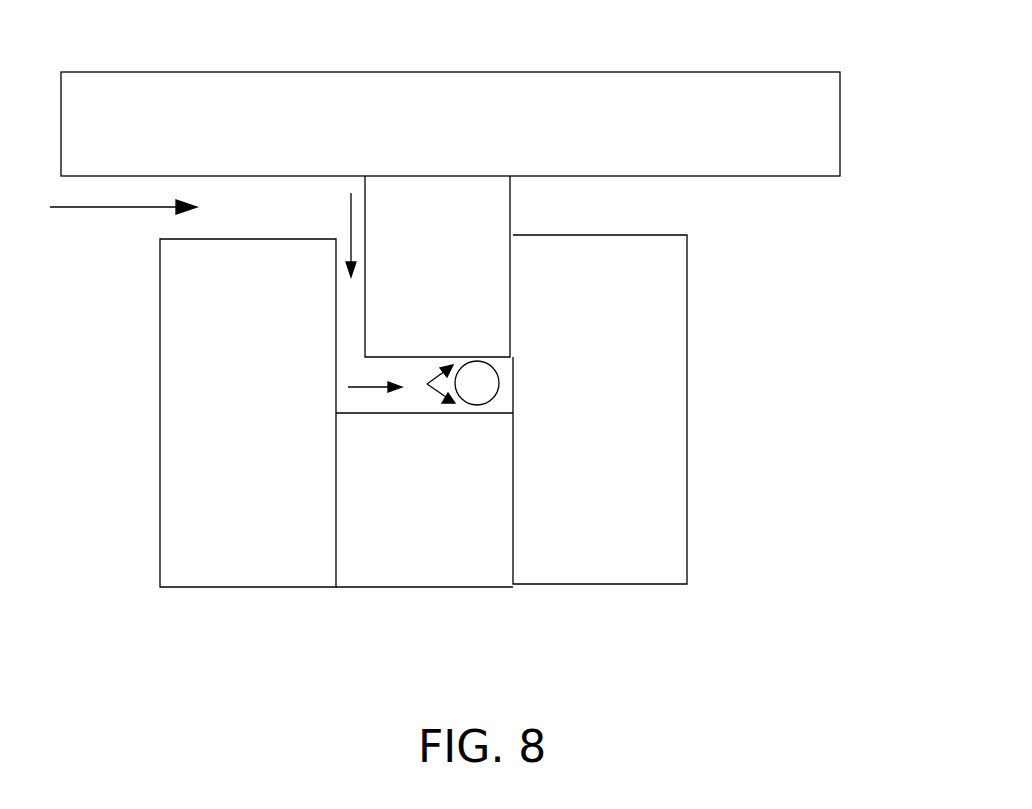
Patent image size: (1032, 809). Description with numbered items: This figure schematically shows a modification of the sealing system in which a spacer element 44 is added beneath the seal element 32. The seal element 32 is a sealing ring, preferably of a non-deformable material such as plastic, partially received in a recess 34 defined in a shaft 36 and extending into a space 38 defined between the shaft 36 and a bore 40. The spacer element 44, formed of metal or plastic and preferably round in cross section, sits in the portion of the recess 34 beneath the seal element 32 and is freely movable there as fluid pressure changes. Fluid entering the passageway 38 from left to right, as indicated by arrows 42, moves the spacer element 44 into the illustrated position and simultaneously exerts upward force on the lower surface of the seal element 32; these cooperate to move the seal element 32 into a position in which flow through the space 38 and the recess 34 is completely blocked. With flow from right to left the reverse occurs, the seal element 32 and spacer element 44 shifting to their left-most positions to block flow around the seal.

The sealing element 32 is at (510, 201).
The recess 34 is at (422, 400).
The shaft 36 is at (160, 562).
The space 38 is at (232, 207).
The bore 40 is at (842, 120).
The arrows 42 is at (102, 208).
The spacer element 44 is at (497, 395).